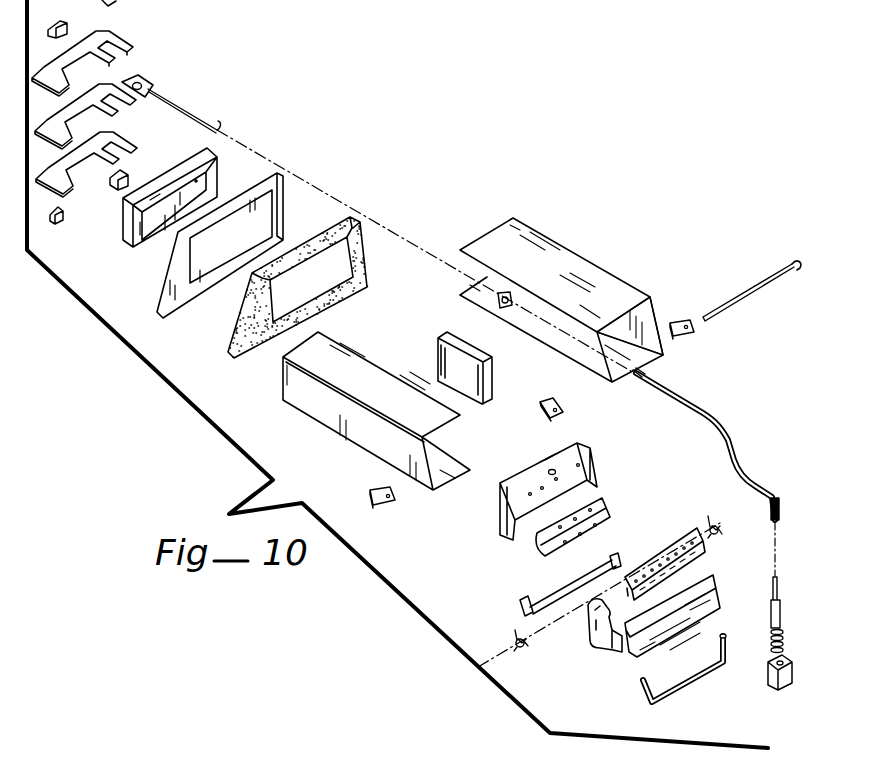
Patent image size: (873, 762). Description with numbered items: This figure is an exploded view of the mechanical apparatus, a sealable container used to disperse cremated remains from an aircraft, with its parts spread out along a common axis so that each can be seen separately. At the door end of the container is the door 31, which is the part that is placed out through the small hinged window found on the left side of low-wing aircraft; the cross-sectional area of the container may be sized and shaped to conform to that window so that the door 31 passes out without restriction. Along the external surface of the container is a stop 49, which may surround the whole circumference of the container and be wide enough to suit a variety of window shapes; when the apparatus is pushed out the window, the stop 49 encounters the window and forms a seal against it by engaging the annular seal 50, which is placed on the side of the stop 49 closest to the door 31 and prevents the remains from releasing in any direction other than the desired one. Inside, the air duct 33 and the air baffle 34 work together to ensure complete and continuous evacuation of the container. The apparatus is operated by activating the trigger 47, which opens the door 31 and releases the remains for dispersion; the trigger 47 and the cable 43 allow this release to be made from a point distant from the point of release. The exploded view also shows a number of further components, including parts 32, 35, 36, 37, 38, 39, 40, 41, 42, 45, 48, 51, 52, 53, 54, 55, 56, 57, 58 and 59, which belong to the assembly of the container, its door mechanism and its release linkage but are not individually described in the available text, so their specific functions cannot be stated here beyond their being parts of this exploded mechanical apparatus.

The door 31 is at (708, 597).
The channel end plate 32 is at (612, 340).
The air duct 33 is at (607, 645).
The air baffle 34 is at (490, 373).
The Z-shaped bracket 35 is at (338, 418).
The folded plate channel 36 is at (553, 250).
The rectangular frame 37 is at (123, 233).
The hinge strip 38 is at (675, 540).
The spring clamp 39 is at (711, 520).
The rod 40 is at (727, 308).
The mounting tab 41 is at (693, 290).
The rod hook 42 is at (790, 265).
The cable 43 is at (773, 515).
The small tab 45 is at (565, 418).
The trigger 47 is at (148, 89).
The U-shaped handle 48 is at (698, 683).
The stop 49 is at (203, 323).
The annular seal 50 is at (366, 267).
The U bracket 51 is at (500, 490).
The clip 52 is at (498, 300).
The washer plate 53 is at (108, 86).
The E-shaped clip 54 is at (128, 47).
The retaining clip 55 is at (765, 684).
The pin 56 is at (767, 600).
The spring 57 is at (768, 638).
The trough bracket 58 is at (603, 508).
The bent tube 59 is at (690, 412).